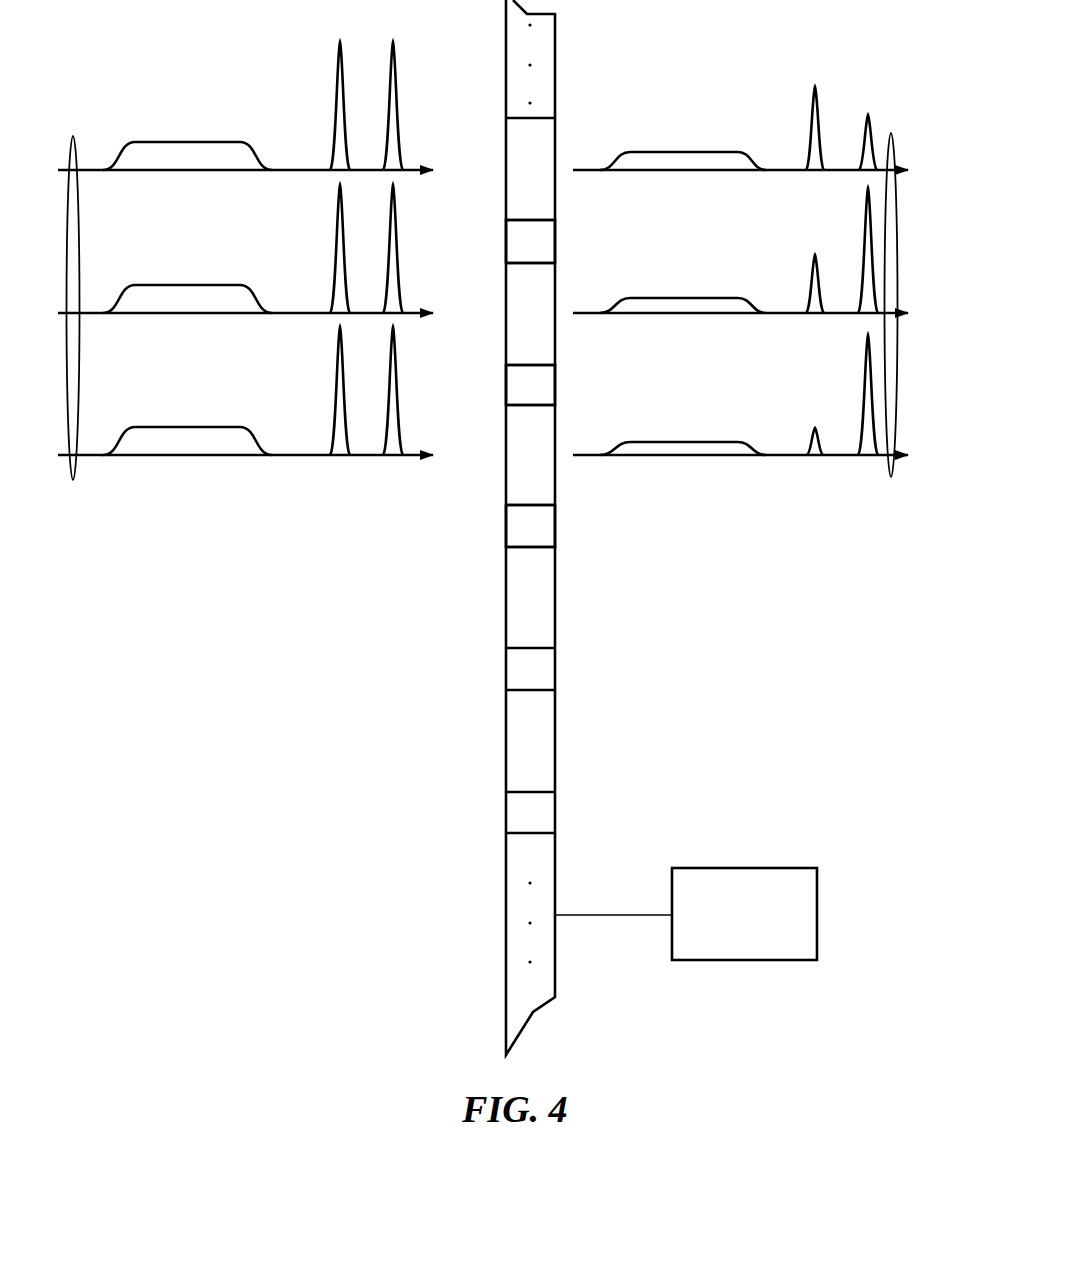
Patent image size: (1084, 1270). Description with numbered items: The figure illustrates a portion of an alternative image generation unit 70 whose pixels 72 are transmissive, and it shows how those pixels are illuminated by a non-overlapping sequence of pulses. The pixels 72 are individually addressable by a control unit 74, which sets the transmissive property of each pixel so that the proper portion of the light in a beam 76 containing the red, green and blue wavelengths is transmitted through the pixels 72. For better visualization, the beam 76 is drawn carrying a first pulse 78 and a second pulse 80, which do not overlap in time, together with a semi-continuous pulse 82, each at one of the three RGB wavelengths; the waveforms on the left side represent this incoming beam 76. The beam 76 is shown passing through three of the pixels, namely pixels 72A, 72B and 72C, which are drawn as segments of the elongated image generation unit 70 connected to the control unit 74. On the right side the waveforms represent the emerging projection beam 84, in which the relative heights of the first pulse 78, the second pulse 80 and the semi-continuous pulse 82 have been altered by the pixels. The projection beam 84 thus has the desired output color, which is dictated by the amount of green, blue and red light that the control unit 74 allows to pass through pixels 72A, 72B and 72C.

The image generation unit 70 is at (556, 67).
The transmissive pixels 72 is at (332, 576).
The pixel 72A is at (556, 200).
The pixel 72B is at (556, 342).
The pixel 72C is at (556, 486).
The control unit 74 is at (697, 868).
The beam 76 is at (76, 148).
The first pulse 78 is at (391, 62).
The second pulse 80 is at (336, 64).
The semi-continuous pulse 82 is at (214, 142).
The projection beam 84 is at (883, 464).